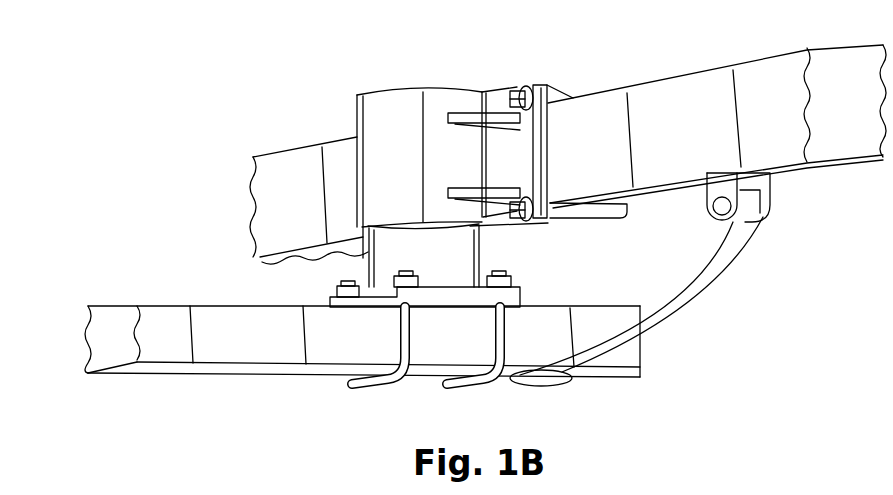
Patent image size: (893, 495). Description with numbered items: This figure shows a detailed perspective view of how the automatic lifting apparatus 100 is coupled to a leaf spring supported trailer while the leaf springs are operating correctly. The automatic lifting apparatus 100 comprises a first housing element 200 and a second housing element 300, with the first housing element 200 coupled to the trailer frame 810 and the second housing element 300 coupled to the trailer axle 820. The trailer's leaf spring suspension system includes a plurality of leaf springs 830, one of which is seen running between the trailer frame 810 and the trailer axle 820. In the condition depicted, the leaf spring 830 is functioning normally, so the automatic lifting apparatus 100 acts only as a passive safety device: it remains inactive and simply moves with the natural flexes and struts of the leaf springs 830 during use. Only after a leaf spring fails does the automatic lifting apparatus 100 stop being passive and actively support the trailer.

The automatic lifting apparatus 100 is at (237, 88).
The first housing element 200 is at (385, 105).
The second housing element 300 is at (466, 247).
The trailer frame 810 is at (645, 92).
The trailer axle 820 is at (228, 350).
The leaf springs 830 is at (686, 317).